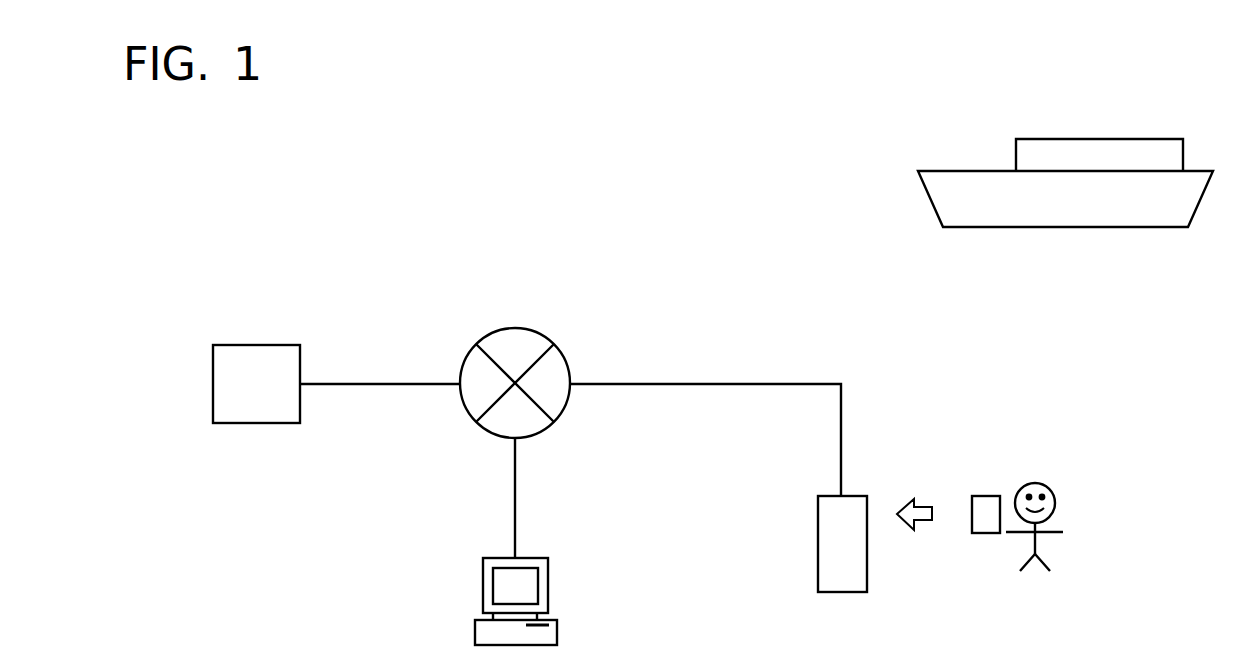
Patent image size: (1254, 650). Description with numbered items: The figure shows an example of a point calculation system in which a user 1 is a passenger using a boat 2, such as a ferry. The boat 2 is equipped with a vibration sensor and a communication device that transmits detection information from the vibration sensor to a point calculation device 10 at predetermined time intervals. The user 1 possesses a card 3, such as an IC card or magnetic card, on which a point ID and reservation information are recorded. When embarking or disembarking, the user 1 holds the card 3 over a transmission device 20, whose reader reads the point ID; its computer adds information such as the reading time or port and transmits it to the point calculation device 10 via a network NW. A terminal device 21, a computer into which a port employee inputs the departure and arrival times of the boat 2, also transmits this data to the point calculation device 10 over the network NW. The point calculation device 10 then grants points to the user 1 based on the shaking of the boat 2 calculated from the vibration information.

The user 1 is at (1037, 485).
The boat 2 is at (1098, 137).
The card 3 is at (989, 496).
The point calculation device 10 is at (258, 345).
The transmission device 20 is at (826, 496).
The terminal device 21 is at (492, 558).
The network NW is at (517, 327).